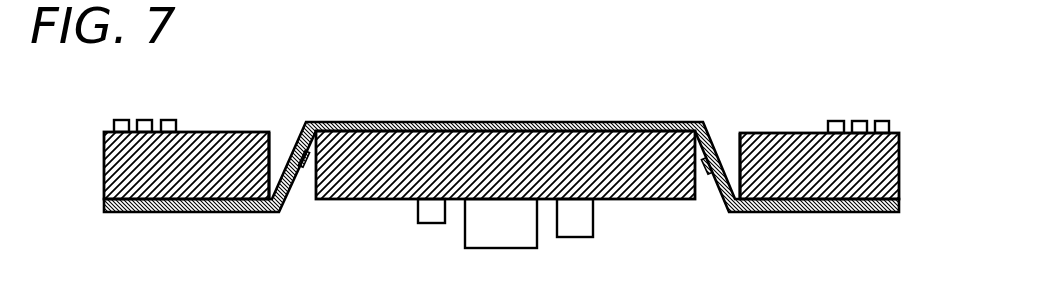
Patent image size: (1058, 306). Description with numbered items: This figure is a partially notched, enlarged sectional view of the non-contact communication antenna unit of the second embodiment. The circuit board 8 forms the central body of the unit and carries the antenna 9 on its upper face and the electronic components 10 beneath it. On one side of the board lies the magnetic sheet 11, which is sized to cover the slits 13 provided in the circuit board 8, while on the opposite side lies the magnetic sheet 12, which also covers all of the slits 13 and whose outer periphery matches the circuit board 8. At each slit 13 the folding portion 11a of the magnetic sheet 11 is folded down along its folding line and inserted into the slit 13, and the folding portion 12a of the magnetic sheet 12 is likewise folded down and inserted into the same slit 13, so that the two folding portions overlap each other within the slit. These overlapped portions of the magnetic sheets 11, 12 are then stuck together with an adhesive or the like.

The circuit board 8 is at (890, 167).
The antenna 9 is at (863, 122).
The electronic components 10 is at (432, 223).
The magnetic sheet 11 is at (492, 122).
The folding portion 11a is at (280, 140).
The magnetic sheet 12 is at (223, 213).
The folding portion 12a is at (298, 200).
The slit 13 is at (272, 125).